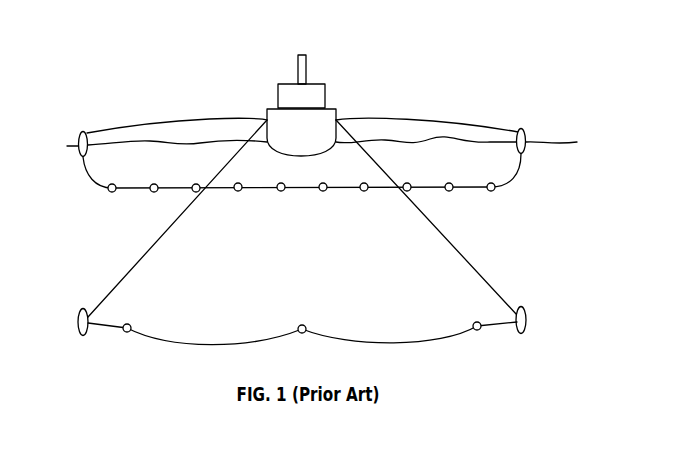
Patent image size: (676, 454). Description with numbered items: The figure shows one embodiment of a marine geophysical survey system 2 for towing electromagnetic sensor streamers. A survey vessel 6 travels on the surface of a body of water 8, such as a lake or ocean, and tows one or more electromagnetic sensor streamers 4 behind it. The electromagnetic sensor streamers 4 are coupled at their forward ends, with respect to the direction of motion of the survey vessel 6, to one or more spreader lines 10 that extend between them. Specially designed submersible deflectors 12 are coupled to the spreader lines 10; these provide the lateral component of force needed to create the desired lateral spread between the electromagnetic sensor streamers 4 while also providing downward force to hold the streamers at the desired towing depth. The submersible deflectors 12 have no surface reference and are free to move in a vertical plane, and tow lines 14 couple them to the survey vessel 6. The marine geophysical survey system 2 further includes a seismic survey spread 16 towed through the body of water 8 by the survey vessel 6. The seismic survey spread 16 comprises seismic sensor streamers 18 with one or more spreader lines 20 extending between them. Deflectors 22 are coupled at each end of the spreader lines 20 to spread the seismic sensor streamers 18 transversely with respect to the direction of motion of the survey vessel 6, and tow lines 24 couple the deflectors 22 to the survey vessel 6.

The marine geophysical survey system 2 is at (375, 39).
The electromagnetic sensor streamers 4 is at (129, 324).
The survey vessel 6 is at (338, 112).
The body of water 8 is at (71, 146).
The spreader lines 10 is at (212, 343).
The submersible deflectors 12 is at (82, 308).
The tow lines 14 is at (143, 255).
The seismic survey spread 16 is at (130, 74).
The seismic sensor streamers 18 is at (113, 183).
The spreader lines 20 is at (89, 181).
The deflectors 22 is at (84, 131).
The tow lines 24 is at (208, 121).